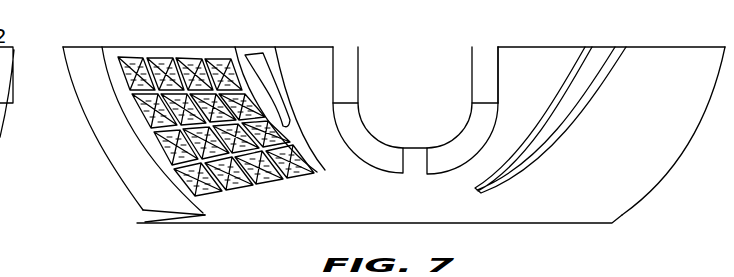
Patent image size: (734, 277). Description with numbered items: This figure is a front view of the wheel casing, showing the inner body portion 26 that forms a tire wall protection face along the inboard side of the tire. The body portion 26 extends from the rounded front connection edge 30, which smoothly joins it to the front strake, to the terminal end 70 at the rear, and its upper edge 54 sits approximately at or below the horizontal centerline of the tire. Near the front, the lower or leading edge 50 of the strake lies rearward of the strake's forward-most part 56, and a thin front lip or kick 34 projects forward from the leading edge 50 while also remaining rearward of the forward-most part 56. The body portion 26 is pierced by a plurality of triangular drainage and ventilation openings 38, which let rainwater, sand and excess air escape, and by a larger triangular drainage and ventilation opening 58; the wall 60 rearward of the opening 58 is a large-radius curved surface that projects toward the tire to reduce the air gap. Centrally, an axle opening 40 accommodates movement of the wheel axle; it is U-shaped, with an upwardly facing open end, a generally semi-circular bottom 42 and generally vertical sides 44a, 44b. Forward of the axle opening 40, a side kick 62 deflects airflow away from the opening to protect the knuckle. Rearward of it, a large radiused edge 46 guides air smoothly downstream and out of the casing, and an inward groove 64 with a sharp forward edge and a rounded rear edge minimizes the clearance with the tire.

The body portion 26 is at (617, 205).
The rounded front connection edge 30 is at (113, 133).
The front kick 34 is at (152, 217).
The drainage and ventilation openings 38 is at (165, 82).
The axle opening 40 is at (423, 48).
The semi-circular bottom 42 is at (413, 162).
The vertically extending side 44a is at (360, 77).
The vertically extending side 44b is at (472, 82).
The radiused edge 46 is at (498, 80).
The leading edge 50 is at (143, 210).
The upper edge 54 is at (658, 48).
The forward-most part 56 is at (63, 58).
The drainage and ventilation opening 58 is at (253, 63).
The wall 60 is at (300, 68).
The side kick 62 is at (373, 155).
The inward groove 64 is at (600, 58).
The terminal end 70 is at (672, 168).